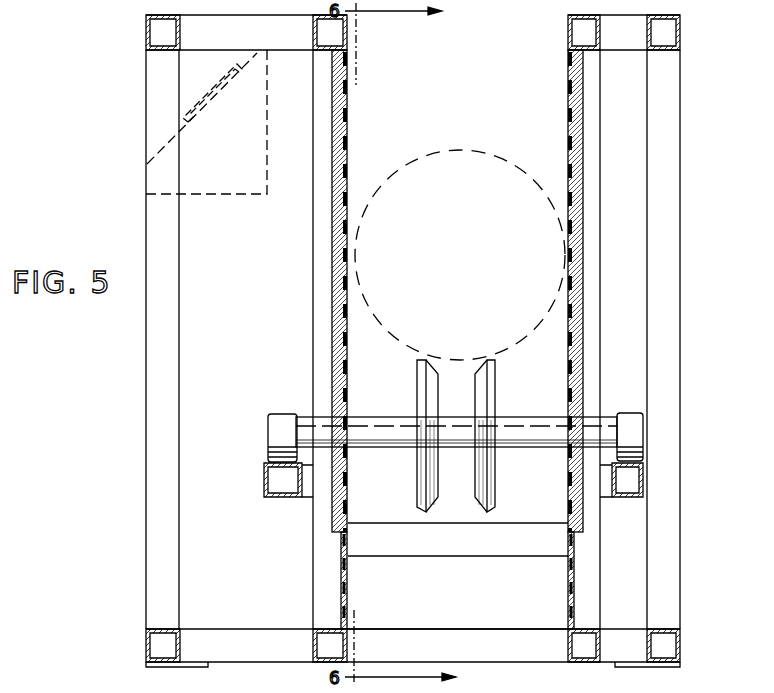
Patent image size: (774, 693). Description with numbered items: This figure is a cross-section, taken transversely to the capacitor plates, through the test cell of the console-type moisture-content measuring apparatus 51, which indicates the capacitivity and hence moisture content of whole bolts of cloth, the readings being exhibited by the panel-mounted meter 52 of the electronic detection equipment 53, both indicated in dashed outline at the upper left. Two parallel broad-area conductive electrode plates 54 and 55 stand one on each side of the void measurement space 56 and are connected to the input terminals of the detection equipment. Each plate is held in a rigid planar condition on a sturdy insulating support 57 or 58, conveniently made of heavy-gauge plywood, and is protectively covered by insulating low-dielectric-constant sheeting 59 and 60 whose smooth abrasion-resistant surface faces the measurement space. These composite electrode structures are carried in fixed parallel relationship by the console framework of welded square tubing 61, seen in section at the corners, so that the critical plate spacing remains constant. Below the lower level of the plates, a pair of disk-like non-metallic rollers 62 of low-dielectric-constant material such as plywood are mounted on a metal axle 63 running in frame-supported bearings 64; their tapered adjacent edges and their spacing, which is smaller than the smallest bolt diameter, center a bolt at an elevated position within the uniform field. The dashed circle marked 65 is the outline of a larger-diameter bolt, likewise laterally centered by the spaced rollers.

The apparatus 51 is at (130, 217).
The panel-mounted meter 52 is at (205, 93).
The electronic detection equipment 53 is at (180, 122).
The conductive electrode plate 54 is at (340, 155).
The conductive electrode plate 55 is at (568, 125).
The measurement space 56 is at (496, 95).
The insulating support 57 is at (333, 222).
The insulating support 58 is at (583, 198).
The insulating low-dielectric-constant sheeting 59 is at (345, 103).
The insulating low-dielectric-constant sheeting 60 is at (568, 92).
The console framework of welded square tubing 61 is at (348, 650).
The disk-like non-metallic rollers 62 is at (476, 477).
The metal axle 63 is at (522, 424).
The frame-supported bearings 64 is at (282, 430).
The outline of larger-diameter bolt 65 is at (460, 150).